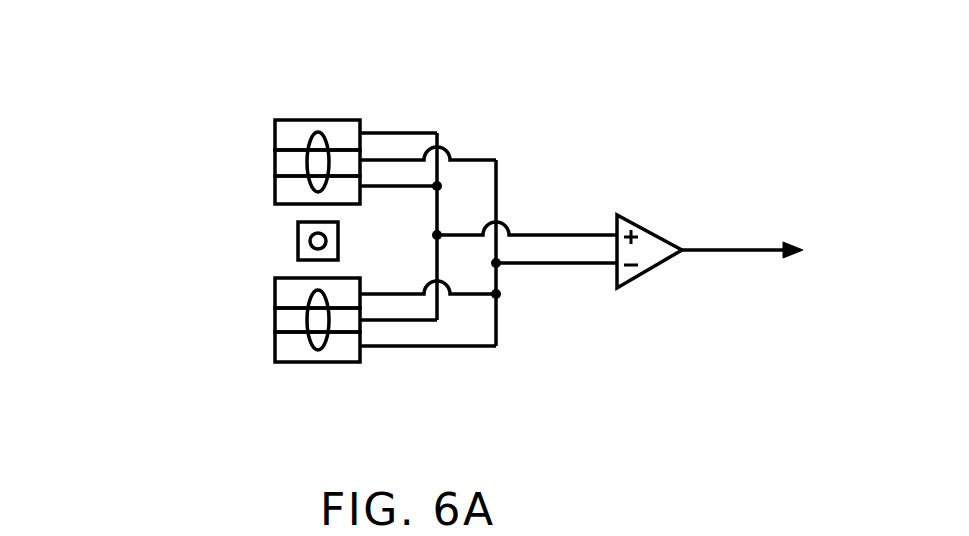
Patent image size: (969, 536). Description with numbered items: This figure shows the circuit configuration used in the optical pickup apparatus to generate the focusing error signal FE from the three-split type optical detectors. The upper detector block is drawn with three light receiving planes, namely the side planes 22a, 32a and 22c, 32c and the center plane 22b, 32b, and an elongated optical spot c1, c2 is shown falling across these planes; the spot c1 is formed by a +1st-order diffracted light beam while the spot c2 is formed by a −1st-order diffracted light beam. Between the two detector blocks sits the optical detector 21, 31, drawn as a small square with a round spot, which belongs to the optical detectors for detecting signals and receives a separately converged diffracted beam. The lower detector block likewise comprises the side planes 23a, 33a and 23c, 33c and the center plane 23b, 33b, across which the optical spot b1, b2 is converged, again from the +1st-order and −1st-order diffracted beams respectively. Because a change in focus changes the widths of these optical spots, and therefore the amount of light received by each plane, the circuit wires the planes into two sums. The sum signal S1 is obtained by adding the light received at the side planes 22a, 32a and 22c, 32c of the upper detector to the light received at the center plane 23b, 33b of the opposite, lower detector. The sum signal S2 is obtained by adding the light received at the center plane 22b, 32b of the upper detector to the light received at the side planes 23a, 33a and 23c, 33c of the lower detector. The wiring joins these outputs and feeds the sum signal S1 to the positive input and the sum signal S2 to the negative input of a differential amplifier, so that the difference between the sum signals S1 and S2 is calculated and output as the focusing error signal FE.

The light receiving plane 22a is at (237, 118).
The light receiving plane 32a is at (275, 134).
The light receiving plane 22b is at (266, 149).
The light receiving plane 32b is at (275, 161).
The light receiving plane 22c is at (239, 181).
The light receiving plane 32c is at (275, 190).
The optical spot c1 is at (383, 101).
The optical spot c2 is at (326, 140).
The optical detector 21 is at (219, 225).
The optical detector 31 is at (298, 227).
The light receiving plane 23a is at (269, 285).
The light receiving plane 33a is at (275, 292).
The light receiving plane 23b is at (237, 317).
The light receiving plane 33b is at (275, 324).
The light receiving plane 23c is at (266, 351).
The light receiving plane 33c is at (275, 350).
The optical spot b1 is at (398, 363).
The optical spot b2 is at (330, 346).
The sum signal S1 is at (527, 214).
The sum signal S2 is at (556, 285).
The focusing error signal FE is at (769, 250).